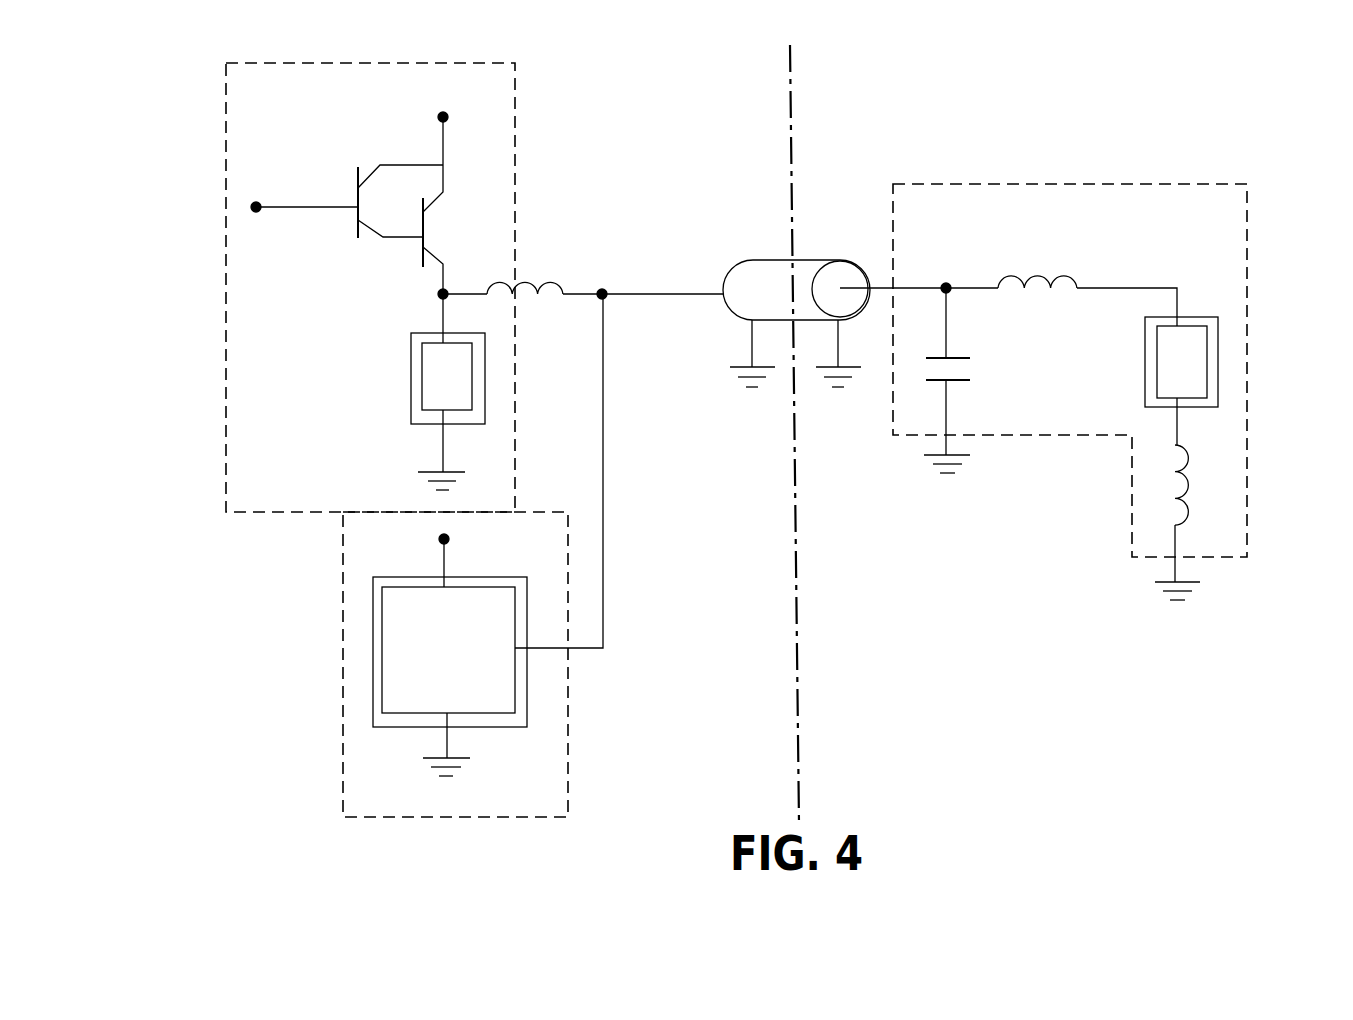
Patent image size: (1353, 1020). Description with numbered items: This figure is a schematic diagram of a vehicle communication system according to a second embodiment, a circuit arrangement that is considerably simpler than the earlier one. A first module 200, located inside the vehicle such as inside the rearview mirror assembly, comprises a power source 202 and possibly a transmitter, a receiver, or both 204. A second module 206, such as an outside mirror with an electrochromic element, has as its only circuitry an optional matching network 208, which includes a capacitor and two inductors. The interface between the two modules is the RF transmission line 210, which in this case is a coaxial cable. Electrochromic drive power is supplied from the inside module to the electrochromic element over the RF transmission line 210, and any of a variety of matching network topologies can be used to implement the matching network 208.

The first module 200 is at (288, 550).
The power source 202 is at (518, 63).
The transmitter, receiver, or both 204 is at (572, 726).
The second module 206 is at (1258, 195).
The matching network 208 is at (1294, 463).
The RF transmission line 210 is at (805, 260).